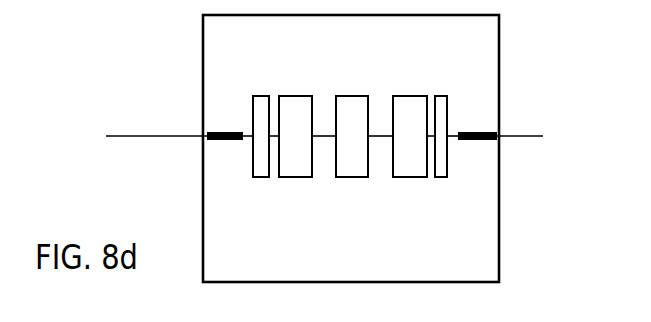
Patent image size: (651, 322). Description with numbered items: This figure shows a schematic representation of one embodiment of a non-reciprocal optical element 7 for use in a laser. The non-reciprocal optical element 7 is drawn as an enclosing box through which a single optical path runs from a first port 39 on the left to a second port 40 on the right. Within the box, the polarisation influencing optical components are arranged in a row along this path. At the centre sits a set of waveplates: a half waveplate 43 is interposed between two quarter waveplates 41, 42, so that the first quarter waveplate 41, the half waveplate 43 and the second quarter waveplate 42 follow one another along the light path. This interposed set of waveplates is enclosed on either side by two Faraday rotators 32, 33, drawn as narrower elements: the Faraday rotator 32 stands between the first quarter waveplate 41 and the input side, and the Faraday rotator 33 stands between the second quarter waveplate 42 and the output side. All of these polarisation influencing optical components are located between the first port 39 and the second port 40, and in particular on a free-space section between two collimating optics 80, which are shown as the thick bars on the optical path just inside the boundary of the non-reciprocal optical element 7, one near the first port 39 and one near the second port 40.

The non-reciprocal optical element 7 is at (490, 33).
The Faraday rotator 32 is at (258, 94).
The Faraday rotator 33 is at (441, 95).
The first port 39 is at (153, 133).
The second port 40 is at (535, 133).
The quarter waveplate 41 is at (298, 160).
The quarter waveplate 42 is at (410, 160).
The half waveplate 43 is at (353, 160).
The collimating optics 80 is at (223, 130).